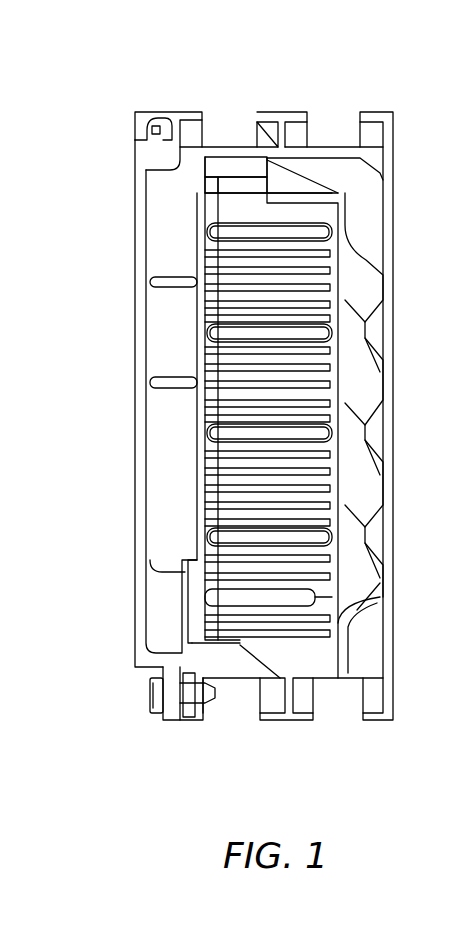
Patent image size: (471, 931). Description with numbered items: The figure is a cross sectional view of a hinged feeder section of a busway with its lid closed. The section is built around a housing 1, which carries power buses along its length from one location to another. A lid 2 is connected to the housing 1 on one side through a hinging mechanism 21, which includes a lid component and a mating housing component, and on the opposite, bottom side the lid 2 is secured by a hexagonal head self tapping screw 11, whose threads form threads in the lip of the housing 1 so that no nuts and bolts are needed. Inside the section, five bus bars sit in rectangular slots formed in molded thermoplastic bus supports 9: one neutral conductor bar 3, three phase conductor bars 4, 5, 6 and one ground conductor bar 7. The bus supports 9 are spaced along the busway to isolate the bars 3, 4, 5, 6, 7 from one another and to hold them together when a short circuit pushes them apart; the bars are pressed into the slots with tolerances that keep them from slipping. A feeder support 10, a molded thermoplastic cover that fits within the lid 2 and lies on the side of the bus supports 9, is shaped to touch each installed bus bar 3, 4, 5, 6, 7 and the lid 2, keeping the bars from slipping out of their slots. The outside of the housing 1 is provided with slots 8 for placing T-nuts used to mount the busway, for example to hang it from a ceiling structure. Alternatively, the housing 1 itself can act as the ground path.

The housing 1 is at (397, 118).
The lid 2 is at (137, 225).
The neutral conductor bar 3 is at (332, 232).
The phase conductor bar 4 is at (332, 333).
The phase conductor bar 5 is at (332, 433).
The phase conductor bar 6 is at (332, 537).
The ground conductor bar 7 is at (335, 598).
The slots 8 is at (230, 130).
The bus supports 9 is at (257, 382).
The feeder support 10 is at (197, 477).
The self tapping screw 11 is at (150, 695).
The hinging mechanism 21 is at (152, 112).